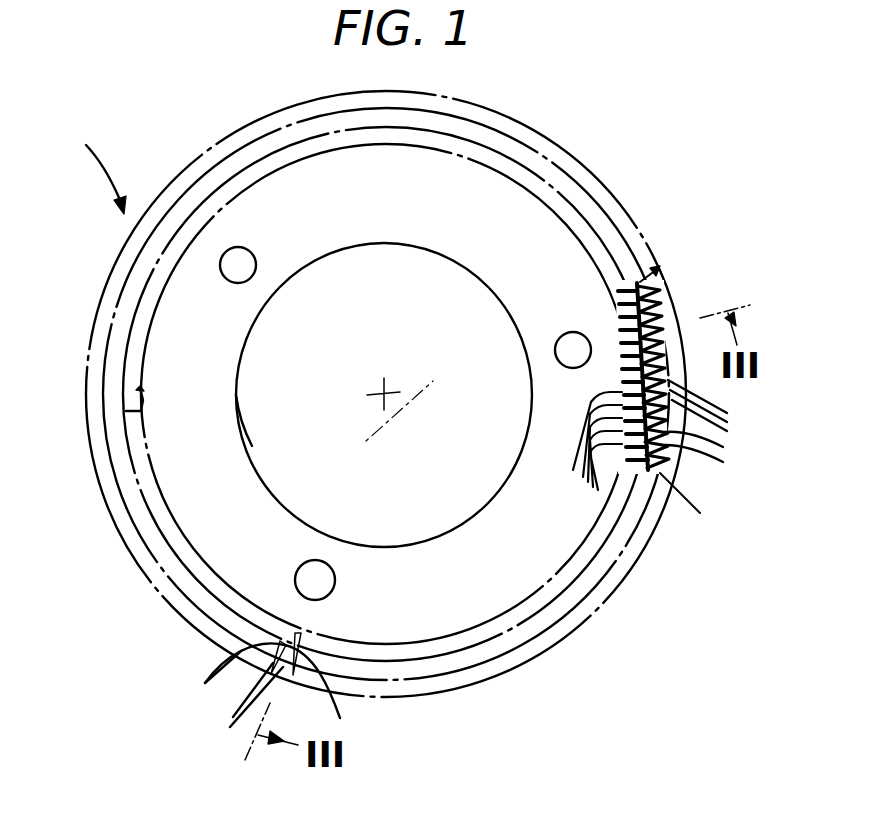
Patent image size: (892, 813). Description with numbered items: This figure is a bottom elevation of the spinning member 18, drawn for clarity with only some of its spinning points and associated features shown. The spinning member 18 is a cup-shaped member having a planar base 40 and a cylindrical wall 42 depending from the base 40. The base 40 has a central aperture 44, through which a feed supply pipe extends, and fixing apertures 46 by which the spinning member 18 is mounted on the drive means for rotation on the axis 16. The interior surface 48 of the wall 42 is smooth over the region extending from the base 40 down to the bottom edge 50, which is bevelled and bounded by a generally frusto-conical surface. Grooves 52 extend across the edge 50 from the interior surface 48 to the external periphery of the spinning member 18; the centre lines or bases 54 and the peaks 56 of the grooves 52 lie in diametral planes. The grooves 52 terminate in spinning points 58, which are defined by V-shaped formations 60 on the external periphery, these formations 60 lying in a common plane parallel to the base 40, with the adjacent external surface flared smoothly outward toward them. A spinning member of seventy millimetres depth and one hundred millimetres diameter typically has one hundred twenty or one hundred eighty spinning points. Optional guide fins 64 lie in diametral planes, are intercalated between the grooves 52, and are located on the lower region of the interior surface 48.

The axis 16 is at (390, 398).
The spinning member 18 is at (89, 168).
The planar base 40 is at (226, 384).
The cylindrical wall 42 is at (483, 130).
The central aperture 44 is at (252, 446).
The fixing apertures 46 is at (243, 262).
The interior surface 48 is at (134, 385).
The bottom edge 50 is at (466, 490).
The grooves 52 is at (657, 292).
The bases of the grooves 54 is at (466, 547).
The peaks of the grooves 56 is at (469, 609).
The spinning points 58 is at (250, 696).
The V-shaped formations 60 is at (713, 461).
The guide fins 64 is at (587, 454).